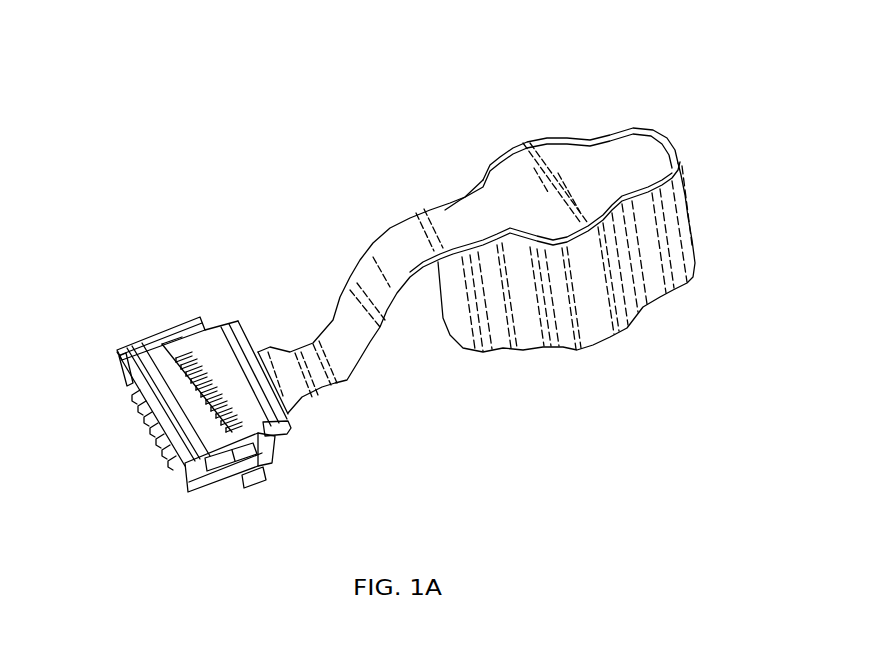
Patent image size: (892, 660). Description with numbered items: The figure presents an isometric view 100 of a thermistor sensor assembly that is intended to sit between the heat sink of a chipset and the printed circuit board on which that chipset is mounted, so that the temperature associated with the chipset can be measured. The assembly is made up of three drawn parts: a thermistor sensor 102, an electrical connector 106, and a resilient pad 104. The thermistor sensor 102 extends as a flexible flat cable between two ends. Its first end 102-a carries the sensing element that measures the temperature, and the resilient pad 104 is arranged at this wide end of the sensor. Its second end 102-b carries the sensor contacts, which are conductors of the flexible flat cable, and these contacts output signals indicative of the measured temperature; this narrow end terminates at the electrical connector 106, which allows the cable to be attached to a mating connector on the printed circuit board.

The isometric view 100 is at (421, 121).
The thermistor sensor 102 is at (397, 217).
The first end 102-a is at (638, 143).
The second end 102-b is at (280, 367).
The resilient pad 104 is at (693, 215).
The electrical connector 106 is at (175, 321).